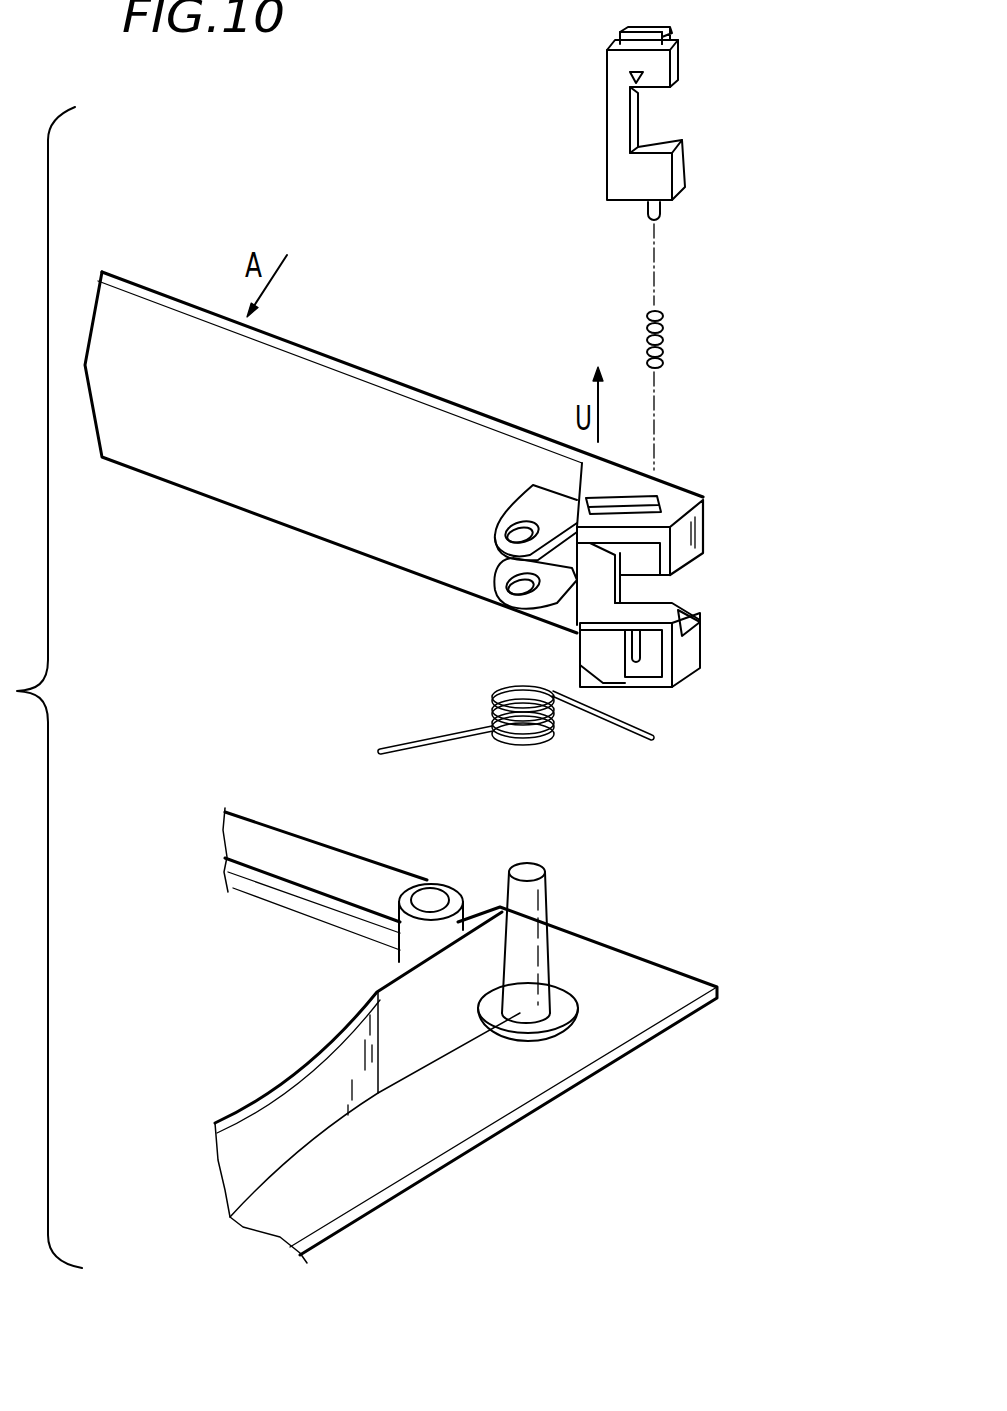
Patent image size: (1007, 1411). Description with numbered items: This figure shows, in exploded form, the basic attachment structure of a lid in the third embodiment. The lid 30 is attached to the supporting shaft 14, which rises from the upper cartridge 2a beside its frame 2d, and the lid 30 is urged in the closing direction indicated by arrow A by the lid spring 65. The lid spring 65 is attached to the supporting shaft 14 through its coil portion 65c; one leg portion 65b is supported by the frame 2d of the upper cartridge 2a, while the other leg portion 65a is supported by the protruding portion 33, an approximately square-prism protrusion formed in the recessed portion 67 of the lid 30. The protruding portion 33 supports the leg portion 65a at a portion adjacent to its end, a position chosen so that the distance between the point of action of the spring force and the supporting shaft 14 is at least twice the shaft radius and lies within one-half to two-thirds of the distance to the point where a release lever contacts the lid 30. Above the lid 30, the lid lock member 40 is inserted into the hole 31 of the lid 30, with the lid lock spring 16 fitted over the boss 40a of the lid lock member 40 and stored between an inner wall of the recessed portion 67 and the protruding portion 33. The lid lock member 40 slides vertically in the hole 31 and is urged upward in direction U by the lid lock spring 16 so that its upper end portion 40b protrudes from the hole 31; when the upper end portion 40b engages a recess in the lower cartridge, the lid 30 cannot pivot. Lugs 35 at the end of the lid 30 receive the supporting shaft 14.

The lid lock member 40 is at (607, 127).
The boss 40a is at (661, 212).
The upper end portion 40b is at (668, 30).
The lid lock spring 16 is at (645, 330).
The hole 31 is at (633, 492).
The lid 30 is at (363, 427).
The hinge lugs 35 is at (497, 530).
The recessed portion 67 is at (653, 643).
The protruding portion 33 is at (633, 663).
The lid spring 65 is at (534, 732).
The leg portion 65a is at (628, 730).
The leg portion 65b is at (462, 737).
The coil portion 65c is at (533, 752).
The supporting shaft 14 is at (532, 917).
The upper cartridge 2a is at (500, 1096).
The frame 2d is at (323, 1123).